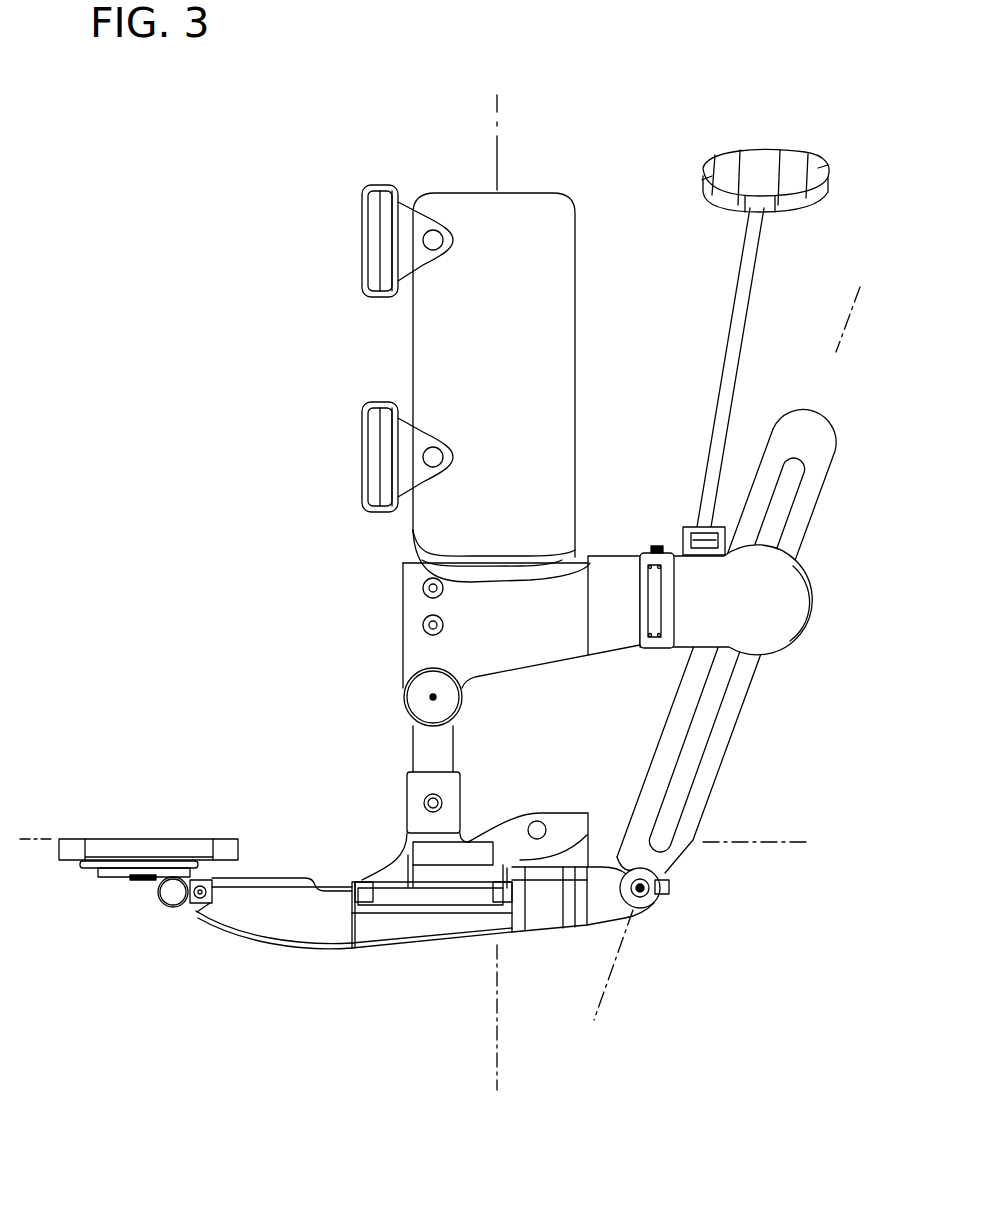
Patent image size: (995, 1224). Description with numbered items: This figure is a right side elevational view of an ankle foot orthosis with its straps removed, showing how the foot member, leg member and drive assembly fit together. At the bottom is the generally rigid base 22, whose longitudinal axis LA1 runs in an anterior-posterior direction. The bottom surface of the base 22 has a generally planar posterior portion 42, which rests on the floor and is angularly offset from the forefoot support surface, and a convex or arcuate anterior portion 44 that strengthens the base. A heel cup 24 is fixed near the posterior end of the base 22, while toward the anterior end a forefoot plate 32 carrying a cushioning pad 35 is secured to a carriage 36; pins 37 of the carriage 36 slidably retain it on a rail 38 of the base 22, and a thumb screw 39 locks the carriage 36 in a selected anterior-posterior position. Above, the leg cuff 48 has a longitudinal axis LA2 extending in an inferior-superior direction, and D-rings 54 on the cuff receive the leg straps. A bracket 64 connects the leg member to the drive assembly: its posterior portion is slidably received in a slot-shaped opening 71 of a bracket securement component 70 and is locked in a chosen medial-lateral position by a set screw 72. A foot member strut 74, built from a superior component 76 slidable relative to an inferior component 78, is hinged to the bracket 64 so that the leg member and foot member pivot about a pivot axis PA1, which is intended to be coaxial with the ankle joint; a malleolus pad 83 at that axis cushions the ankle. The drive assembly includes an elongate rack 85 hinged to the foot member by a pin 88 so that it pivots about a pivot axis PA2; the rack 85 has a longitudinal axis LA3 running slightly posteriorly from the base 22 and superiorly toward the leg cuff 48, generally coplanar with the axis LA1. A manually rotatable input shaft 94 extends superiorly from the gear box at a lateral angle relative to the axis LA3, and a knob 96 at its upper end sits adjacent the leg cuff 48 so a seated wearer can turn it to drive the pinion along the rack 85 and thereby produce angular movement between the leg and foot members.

The base 22 is at (365, 925).
The heel cup 24 is at (573, 832).
The forefoot plate 32 is at (68, 865).
The pad 35 is at (73, 848).
The carriage 36 is at (228, 870).
The pins 37 is at (200, 898).
The rail 38 is at (283, 880).
The thumb screw 39 is at (158, 892).
The posterior portion 42 is at (548, 925).
The anterior portion 44 is at (297, 943).
The leg cuff 48 is at (555, 250).
The D-ring 54 is at (360, 213).
The bracket 64 is at (545, 638).
The bracket securement component 70 is at (680, 570).
The slot-shaped opening 71 is at (668, 650).
The set screw 72 is at (655, 545).
The foot member strut 74 is at (382, 780).
The superior component 76 is at (438, 745).
The inferior component 78 is at (452, 820).
The malleolus pad 83 is at (417, 702).
The rack 85 is at (808, 497).
The pin 88 is at (636, 893).
The input shaft 94 is at (750, 270).
The knob 96 is at (790, 165).
The pivot axis PA1 is at (433, 697).
The pivot axis PA2 is at (655, 888).
The longitudinal axis LA1 is at (33, 833).
The longitudinal axis LA2 is at (497, 112).
The longitudinal axis LA3 is at (840, 300).